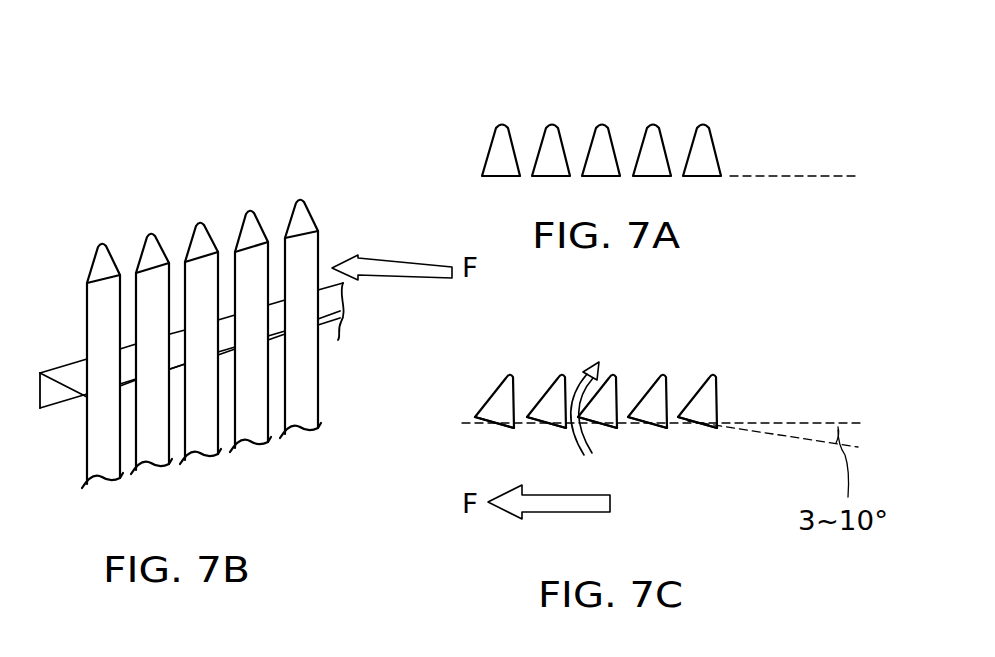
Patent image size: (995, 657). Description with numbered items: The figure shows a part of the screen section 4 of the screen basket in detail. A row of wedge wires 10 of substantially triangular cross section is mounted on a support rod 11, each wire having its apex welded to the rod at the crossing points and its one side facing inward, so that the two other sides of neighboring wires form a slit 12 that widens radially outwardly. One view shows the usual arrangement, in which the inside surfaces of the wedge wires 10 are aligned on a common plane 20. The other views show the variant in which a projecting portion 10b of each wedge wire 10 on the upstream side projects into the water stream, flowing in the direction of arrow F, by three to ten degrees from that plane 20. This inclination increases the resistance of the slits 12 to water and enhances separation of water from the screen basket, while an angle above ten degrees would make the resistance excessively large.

In FIG. 7B, the screen section 4 is at (241, 294).
In FIG. 7A, the wedge wire 10 is at (597, 127).
In FIG. 7B, the wedge wire 10 is at (308, 212).
In FIG. 7C, the wedge wire 10 is at (658, 387).
In FIG. 7B, the projecting portion 10b is at (318, 233).
In FIG. 7C, the projecting portion 10b is at (665, 428).
In FIG. 7B, the support rod 11 is at (57, 360).
In FIG. 7A, the slit 12 is at (678, 138).
In FIG. 7B, the slit 12 is at (277, 228).
In FIG. 7C, the slit 12 is at (680, 393).
In FIG. 7A, the plane 20 is at (770, 178).